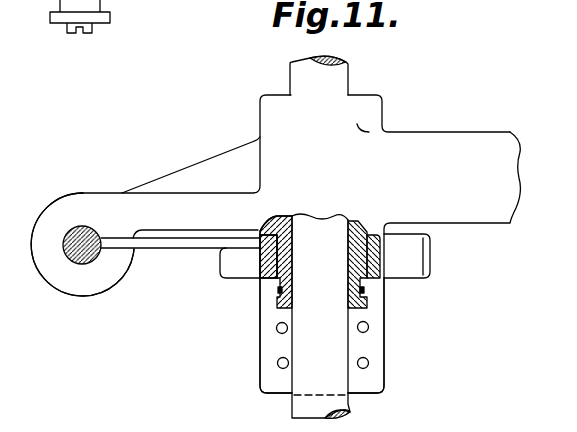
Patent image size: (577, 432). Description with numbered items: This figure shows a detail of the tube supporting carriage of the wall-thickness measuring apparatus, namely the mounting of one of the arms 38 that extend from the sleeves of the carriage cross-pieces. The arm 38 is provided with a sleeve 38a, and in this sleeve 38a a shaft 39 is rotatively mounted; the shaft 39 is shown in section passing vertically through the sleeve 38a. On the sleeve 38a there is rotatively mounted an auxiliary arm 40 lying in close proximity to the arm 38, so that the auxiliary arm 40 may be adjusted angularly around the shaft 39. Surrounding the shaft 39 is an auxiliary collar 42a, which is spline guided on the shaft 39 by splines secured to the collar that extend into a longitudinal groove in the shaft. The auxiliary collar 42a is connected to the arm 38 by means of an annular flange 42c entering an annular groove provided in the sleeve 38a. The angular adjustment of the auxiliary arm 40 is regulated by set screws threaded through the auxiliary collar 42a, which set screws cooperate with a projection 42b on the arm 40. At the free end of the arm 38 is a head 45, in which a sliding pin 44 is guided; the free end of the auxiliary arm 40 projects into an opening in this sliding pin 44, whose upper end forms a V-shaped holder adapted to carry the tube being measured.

The arm 38 is at (160, 203).
The sleeve 38a is at (366, 280).
The shaft 39 is at (336, 82).
The auxiliary arm 40 is at (209, 246).
The auxiliary collar 42a is at (271, 343).
The projection 42b is at (231, 268).
The annular flange 42c is at (281, 290).
The sliding pin 44 is at (78, 261).
The head 45 is at (84, 287).